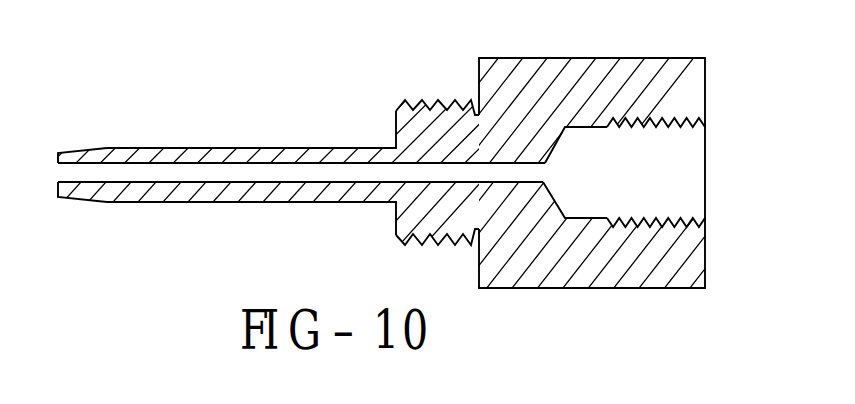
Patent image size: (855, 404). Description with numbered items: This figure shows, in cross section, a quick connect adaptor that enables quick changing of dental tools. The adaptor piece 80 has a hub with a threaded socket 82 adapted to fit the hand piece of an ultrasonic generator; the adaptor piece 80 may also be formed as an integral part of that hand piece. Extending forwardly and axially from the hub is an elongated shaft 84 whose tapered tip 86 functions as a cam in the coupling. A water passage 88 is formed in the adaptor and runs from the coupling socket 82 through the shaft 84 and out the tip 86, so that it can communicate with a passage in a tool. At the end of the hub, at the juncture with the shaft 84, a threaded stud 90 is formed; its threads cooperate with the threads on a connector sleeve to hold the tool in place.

The adaptor piece 80 is at (528, 58).
The threaded socket 82 is at (647, 218).
The elongated shaft 84 is at (250, 147).
The tapered tip 86 is at (80, 150).
The water passage 88 is at (118, 174).
The threaded stud 90 is at (433, 103).